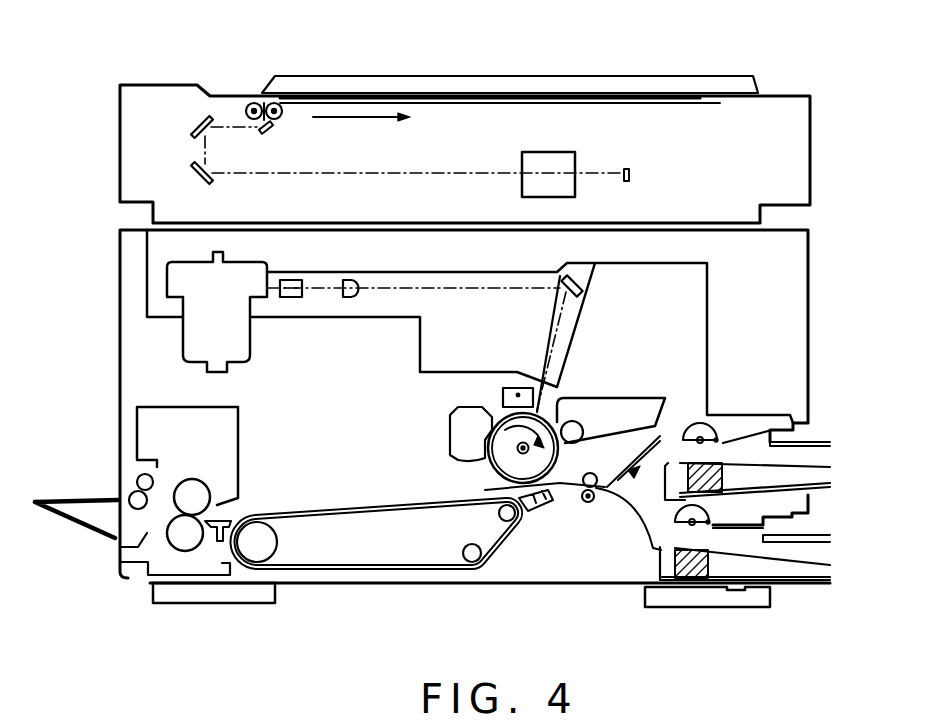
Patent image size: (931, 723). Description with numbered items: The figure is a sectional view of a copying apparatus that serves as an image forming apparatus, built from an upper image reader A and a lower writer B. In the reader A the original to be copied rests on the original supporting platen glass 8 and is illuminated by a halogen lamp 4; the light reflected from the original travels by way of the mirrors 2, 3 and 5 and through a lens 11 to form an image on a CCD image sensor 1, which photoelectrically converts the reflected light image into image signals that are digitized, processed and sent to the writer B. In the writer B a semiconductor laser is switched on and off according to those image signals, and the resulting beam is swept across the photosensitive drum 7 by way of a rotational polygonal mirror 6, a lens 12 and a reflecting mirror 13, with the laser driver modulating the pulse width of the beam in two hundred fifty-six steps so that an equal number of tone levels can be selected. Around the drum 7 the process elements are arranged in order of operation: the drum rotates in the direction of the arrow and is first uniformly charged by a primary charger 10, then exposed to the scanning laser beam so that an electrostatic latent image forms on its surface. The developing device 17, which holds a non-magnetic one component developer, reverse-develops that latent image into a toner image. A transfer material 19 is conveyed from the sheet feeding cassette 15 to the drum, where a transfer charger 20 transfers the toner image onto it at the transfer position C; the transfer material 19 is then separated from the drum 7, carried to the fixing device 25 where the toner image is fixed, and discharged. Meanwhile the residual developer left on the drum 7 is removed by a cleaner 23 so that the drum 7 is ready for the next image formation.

The CCD image sensor 1 is at (627, 166).
The mirror 2 is at (190, 170).
The mirror 3 is at (194, 122).
The halogen lamp 4 is at (256, 101).
The mirror 5 is at (272, 129).
The rotational polygonal mirror 6 is at (243, 273).
The photosensitive drum 7 is at (488, 466).
The original supporting platen glass 8 is at (460, 95).
The primary charger 10 is at (504, 396).
The lens 11 is at (555, 153).
The lens 12 is at (345, 300).
The reflecting mirror 13 is at (585, 282).
The sheet feeding cassette 15 is at (802, 458).
The developing device 17 is at (620, 414).
The transfer material 19 is at (568, 491).
The transfer charger 20 is at (527, 511).
The cleaner 23 is at (452, 425).
The fixing device 25 is at (200, 567).
The image reader A is at (780, 172).
The writer B is at (712, 293).
The transfer position C is at (488, 478).